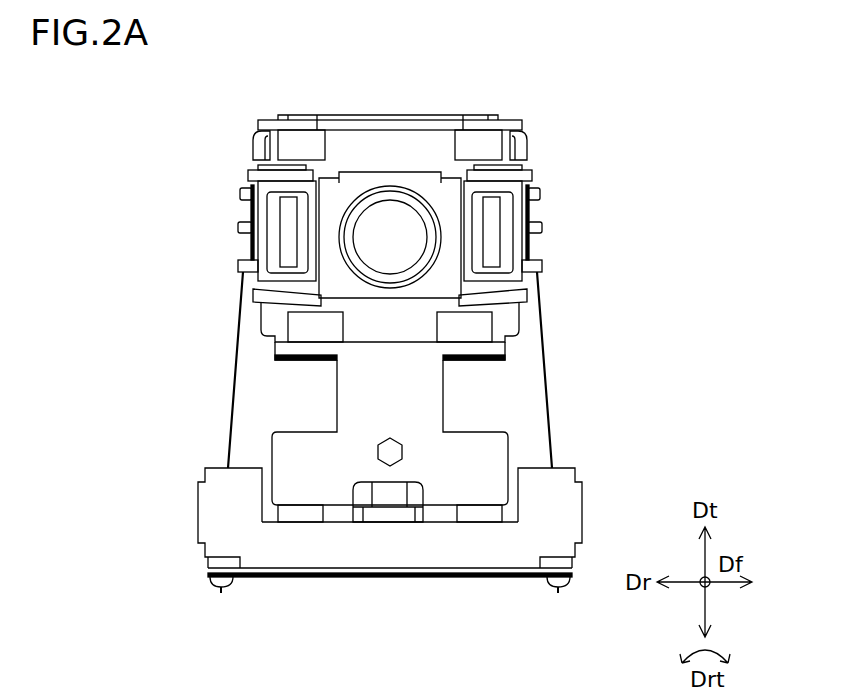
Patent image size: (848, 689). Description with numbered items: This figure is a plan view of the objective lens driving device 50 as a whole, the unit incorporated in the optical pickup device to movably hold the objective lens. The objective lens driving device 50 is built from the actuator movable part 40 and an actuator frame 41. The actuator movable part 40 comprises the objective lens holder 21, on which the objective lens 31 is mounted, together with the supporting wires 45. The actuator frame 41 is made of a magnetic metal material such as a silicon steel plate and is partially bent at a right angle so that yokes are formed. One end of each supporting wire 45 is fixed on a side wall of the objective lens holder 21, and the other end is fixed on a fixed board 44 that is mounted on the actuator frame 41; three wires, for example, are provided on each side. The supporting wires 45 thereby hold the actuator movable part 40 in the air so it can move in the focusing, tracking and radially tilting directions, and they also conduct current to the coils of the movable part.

The objective lens driving device 50 is at (313, 88).
The objective lens 31 is at (390, 235).
The objective lens holder (OBL holder) 21 is at (524, 214).
The actuator movable part 40 is at (619, 200).
The supporting wires 45 is at (541, 329).
The actuator frame 41 is at (497, 442).
The fixed board 44 is at (334, 553).